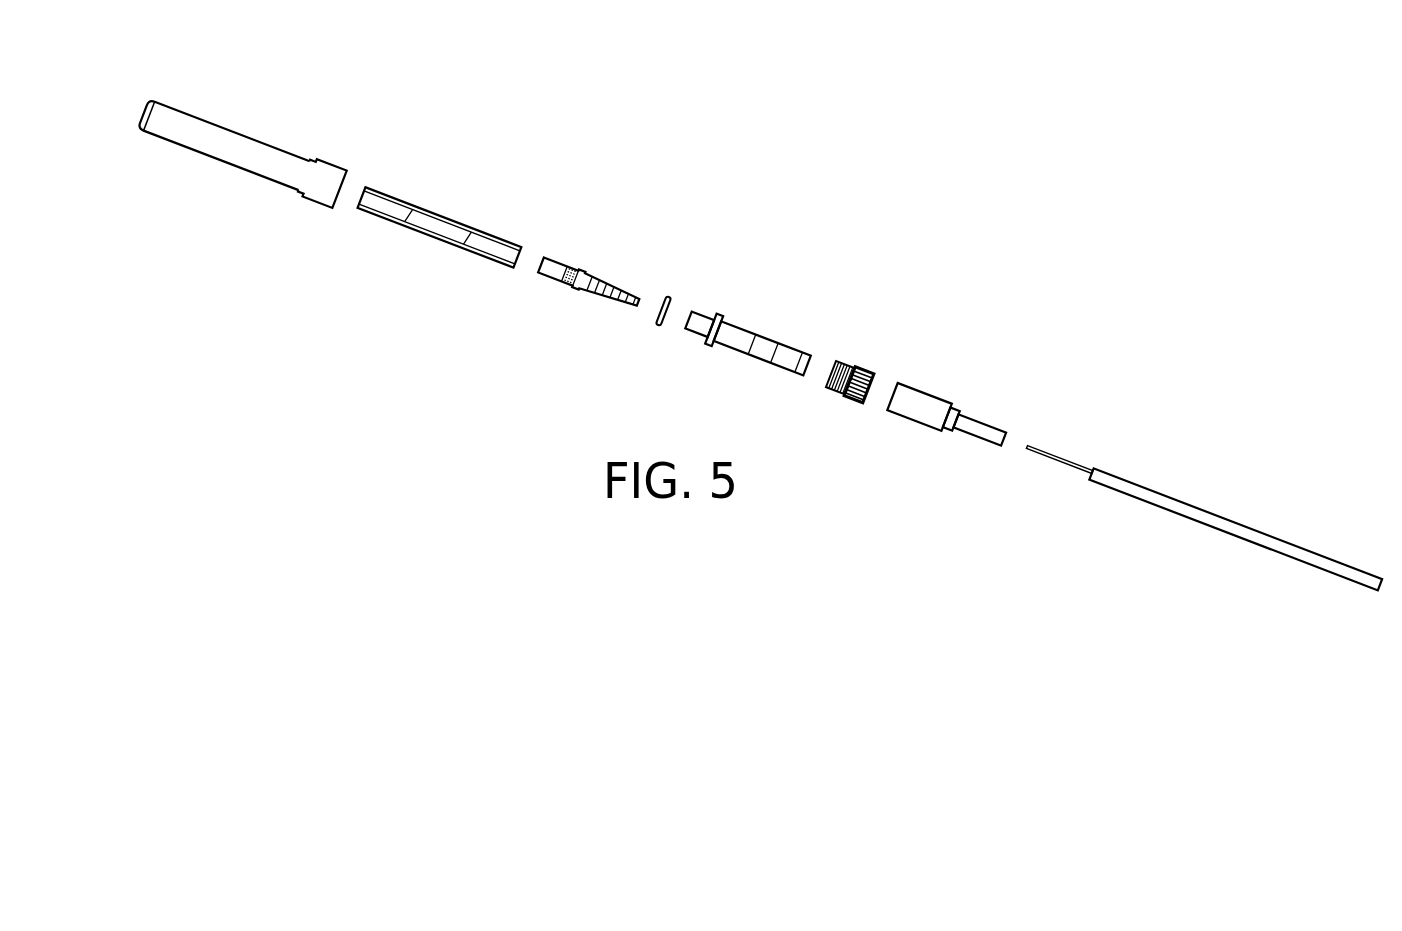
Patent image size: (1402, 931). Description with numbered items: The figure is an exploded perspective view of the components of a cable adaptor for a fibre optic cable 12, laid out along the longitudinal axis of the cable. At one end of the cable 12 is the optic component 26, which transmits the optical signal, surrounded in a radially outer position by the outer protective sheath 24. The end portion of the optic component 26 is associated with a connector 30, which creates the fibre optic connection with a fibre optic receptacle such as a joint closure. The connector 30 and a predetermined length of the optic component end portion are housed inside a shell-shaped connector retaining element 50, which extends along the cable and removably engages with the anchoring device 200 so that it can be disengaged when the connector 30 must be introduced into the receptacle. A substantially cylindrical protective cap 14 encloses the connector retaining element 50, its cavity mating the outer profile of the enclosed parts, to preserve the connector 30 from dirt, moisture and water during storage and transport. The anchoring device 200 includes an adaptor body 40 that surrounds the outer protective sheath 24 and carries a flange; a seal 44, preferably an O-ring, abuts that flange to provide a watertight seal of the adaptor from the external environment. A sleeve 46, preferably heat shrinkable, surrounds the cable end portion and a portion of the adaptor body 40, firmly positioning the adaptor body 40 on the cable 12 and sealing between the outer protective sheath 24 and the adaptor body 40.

The fibre optic cable 12 is at (1291, 489).
The protective cap 14 is at (222, 125).
The connector retaining element 50 is at (450, 218).
The connector 30 is at (562, 263).
The seal 44 is at (670, 297).
The adaptor body 40 is at (750, 333).
The anchoring device 200 is at (858, 368).
The sleeve 46 is at (930, 396).
The optic component 26 is at (1058, 456).
The outer protective sheath 24 is at (1188, 502).